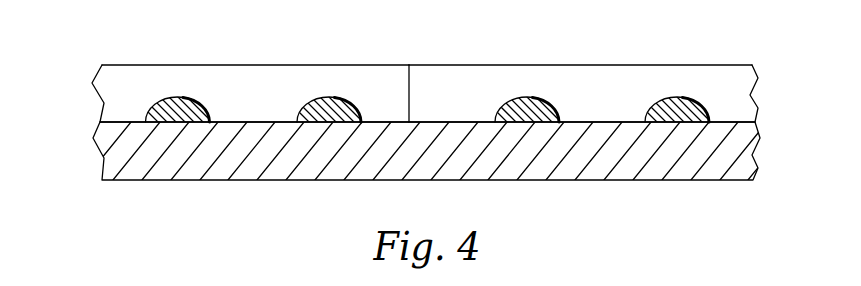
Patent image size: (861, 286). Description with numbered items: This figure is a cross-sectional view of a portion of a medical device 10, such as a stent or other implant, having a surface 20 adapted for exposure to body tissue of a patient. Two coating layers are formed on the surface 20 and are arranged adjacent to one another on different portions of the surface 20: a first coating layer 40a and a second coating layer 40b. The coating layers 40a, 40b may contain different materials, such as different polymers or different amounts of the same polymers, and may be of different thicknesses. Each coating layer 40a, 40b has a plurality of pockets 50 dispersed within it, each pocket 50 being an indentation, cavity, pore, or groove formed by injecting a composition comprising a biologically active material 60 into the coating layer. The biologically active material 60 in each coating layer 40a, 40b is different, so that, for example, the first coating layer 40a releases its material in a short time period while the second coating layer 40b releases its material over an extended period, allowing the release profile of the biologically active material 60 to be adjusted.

The medical device 10 is at (760, 153).
The surface 20 is at (431, 80).
The first coating layer 40a is at (122, 110).
The second coating layer 40b is at (735, 90).
The pocket 50 is at (166, 98).
The biologically active material 60 is at (157, 104).